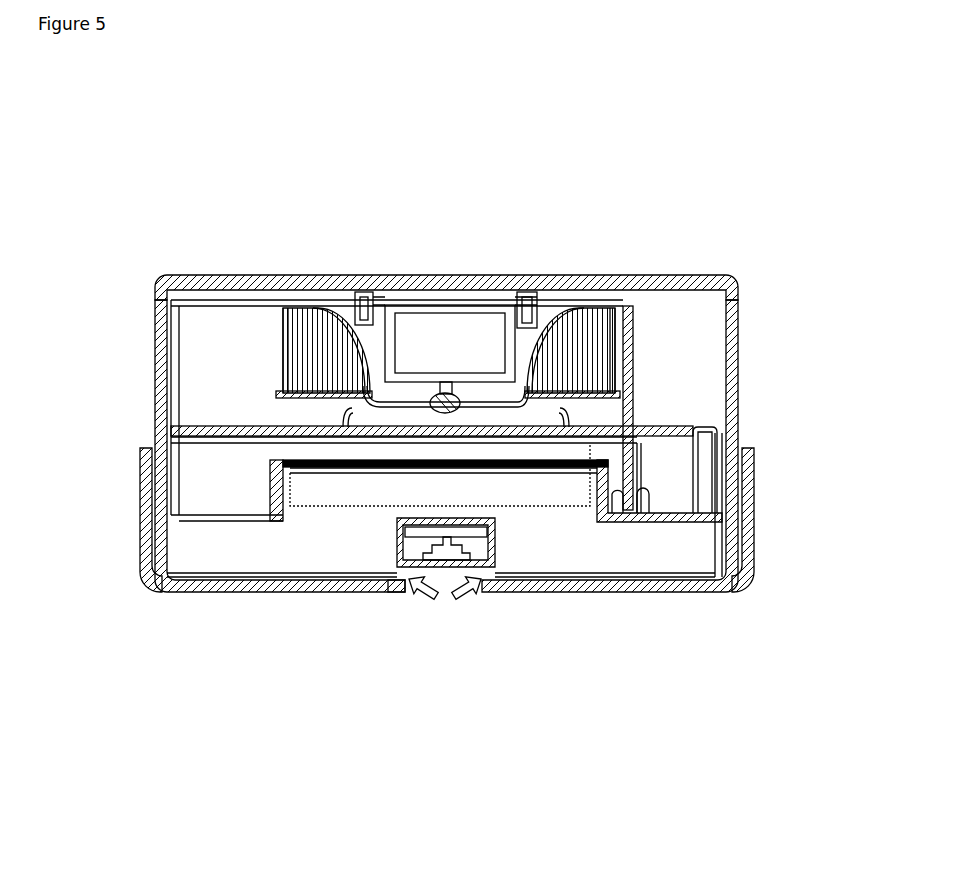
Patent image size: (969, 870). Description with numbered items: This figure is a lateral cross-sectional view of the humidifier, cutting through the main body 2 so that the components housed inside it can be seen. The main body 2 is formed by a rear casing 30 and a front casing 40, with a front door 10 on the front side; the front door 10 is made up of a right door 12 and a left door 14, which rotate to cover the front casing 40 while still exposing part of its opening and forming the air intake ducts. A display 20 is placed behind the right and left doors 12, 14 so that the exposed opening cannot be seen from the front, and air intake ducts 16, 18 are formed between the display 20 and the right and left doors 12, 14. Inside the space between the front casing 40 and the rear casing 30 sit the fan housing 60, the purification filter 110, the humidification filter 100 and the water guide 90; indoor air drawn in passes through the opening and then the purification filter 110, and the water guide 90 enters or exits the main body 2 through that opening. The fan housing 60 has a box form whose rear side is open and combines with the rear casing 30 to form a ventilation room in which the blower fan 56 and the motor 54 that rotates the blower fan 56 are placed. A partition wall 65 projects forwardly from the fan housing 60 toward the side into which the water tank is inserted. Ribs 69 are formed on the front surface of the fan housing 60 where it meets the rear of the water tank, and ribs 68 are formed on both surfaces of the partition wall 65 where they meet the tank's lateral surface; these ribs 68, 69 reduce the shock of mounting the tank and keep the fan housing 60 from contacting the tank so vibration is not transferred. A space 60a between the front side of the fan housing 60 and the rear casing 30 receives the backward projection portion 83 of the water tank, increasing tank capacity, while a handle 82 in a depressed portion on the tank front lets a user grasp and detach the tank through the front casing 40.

The main body 2 is at (486, 390).
The front door 10 is at (439, 645).
The right door 12 is at (512, 592).
The left door 14 is at (385, 600).
The air intake duct 16 is at (487, 585).
The air intake duct 18 is at (405, 592).
The display 20 is at (497, 548).
The rear casing 30 is at (740, 282).
The front casing 40 is at (740, 360).
The motor 54 is at (440, 328).
The blower fan 56 is at (314, 342).
The fan housing 60 is at (292, 441).
The space 60a is at (705, 440).
The partition wall 65 is at (613, 490).
The ribs 68 is at (698, 500).
The ribs 69 is at (642, 495).
The handle 82 is at (708, 505).
The backward projection portion 83 is at (700, 430).
The water guide 90 is at (193, 488).
The humidification filter 100 is at (322, 453).
The purification filter 110 is at (273, 492).